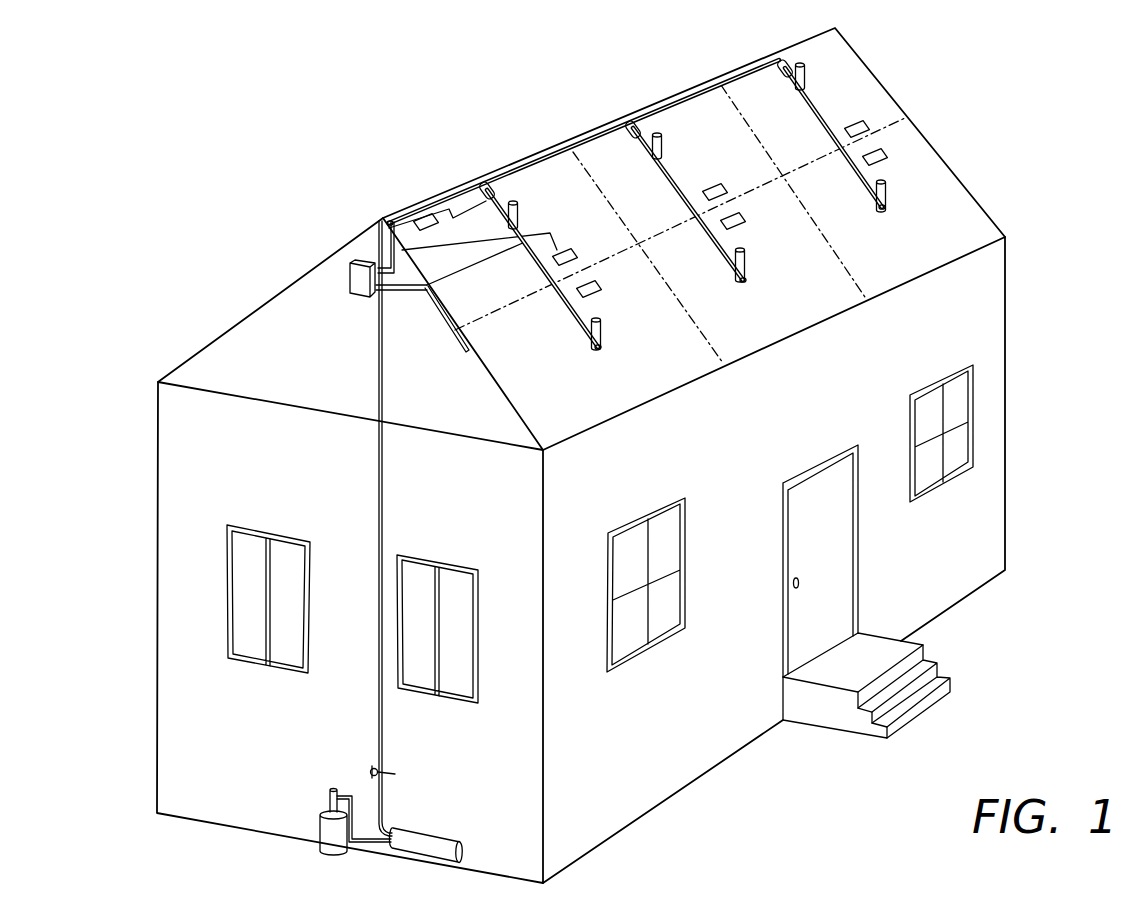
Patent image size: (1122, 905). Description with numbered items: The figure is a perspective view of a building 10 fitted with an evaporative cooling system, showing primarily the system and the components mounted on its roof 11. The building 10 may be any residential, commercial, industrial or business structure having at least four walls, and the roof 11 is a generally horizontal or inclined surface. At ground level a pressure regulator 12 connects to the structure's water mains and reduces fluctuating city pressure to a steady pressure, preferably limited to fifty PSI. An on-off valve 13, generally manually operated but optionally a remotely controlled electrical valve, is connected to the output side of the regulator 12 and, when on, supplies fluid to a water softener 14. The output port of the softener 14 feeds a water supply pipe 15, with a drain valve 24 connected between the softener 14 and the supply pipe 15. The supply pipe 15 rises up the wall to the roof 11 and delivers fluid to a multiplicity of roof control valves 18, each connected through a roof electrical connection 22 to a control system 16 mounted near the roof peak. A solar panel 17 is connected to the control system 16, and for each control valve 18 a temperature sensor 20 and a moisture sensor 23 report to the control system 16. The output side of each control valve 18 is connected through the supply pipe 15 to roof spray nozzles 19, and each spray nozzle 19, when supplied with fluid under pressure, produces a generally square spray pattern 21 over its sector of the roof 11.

The building 10 is at (737, 465).
The roof 11 is at (558, 432).
The pressure regulator 12 is at (318, 832).
The on-off valve 13 is at (330, 793).
The water softener 14 is at (422, 828).
The water supply pipe 15 is at (382, 743).
The control system 16 is at (345, 268).
The solar panel 17 is at (392, 218).
The roof control valve 18 is at (478, 193).
The roof spray nozzle 19 is at (522, 216).
The temperature sensor 20 is at (578, 252).
The spray pattern 21 is at (552, 156).
The roof electrical connection 22 is at (455, 275).
The moisture sensor 23 is at (601, 289).
The drain valve 24 is at (370, 773).